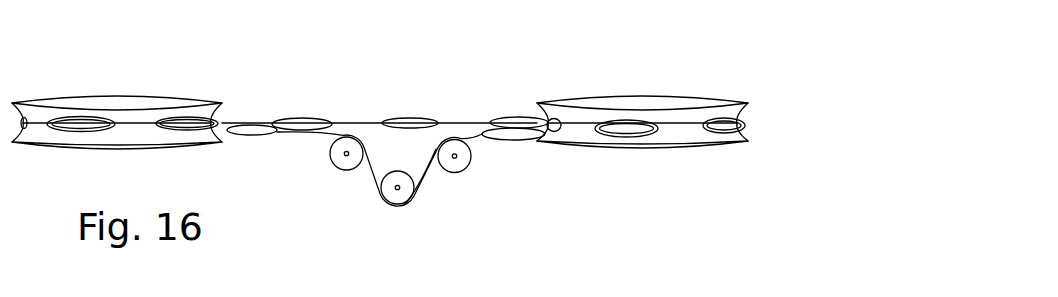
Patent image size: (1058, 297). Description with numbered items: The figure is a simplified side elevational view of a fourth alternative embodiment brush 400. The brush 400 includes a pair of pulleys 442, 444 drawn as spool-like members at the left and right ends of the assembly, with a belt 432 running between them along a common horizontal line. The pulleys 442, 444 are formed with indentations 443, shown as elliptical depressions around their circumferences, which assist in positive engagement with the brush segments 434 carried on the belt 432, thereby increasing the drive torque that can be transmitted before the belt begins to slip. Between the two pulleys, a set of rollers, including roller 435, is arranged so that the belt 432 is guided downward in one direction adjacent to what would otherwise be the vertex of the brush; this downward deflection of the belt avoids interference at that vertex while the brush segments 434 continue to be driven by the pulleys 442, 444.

The brush 400 is at (517, 30).
The pulley 442 is at (108, 104).
The pulley 444 is at (655, 103).
The indentations 443 is at (216, 114).
The brush segments 434 is at (409, 119).
The belt 432 is at (470, 119).
The roller 435 is at (381, 193).